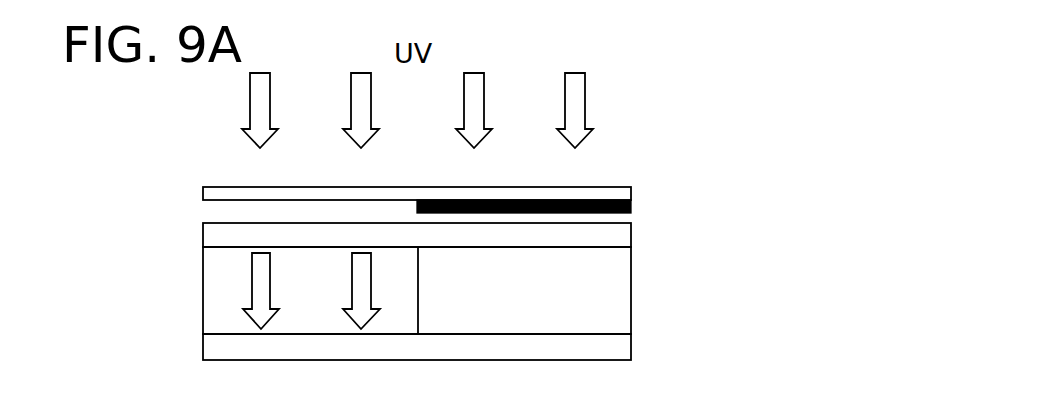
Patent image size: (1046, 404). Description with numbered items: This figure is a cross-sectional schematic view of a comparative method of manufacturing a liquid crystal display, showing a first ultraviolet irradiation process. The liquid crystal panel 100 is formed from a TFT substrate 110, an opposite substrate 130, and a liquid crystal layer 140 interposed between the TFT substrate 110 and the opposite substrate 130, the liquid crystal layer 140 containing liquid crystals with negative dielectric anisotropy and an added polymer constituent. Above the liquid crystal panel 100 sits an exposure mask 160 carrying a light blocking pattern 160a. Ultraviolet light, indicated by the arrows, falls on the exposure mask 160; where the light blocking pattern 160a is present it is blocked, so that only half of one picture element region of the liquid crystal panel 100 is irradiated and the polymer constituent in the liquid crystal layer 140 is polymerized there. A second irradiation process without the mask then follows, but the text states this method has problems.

The liquid crystal panel 100 is at (190, 225).
The exposure mask 160 is at (605, 193).
The light blocking pattern 160a is at (632, 207).
The TFT substrate 110 is at (618, 235).
The liquid crystal layer 140 is at (620, 293).
The opposite substrate 130 is at (620, 345).